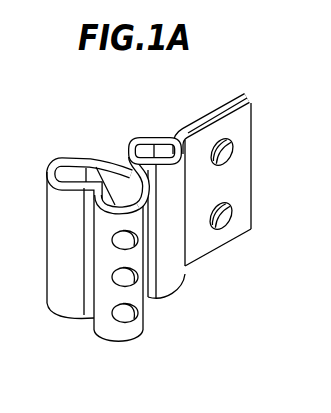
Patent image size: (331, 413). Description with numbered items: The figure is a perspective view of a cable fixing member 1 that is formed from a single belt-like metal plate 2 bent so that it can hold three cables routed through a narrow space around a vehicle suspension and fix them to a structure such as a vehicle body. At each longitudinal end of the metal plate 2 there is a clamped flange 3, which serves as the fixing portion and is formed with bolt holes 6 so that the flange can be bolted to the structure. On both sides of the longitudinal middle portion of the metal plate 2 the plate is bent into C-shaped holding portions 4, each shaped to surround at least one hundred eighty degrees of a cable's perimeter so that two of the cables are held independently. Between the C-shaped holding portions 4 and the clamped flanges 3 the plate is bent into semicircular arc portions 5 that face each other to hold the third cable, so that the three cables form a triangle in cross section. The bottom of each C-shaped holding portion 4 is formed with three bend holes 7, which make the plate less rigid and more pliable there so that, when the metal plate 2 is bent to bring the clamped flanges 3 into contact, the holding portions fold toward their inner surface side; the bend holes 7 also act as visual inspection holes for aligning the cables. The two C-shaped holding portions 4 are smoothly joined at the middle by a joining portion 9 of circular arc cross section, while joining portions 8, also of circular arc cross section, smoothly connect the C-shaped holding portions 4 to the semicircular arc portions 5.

The cable fixing member 1 is at (118, 112).
The metal plate 2 is at (221, 106).
The clamped flanges 3 is at (247, 142).
The C-shaped holding portions 4 is at (54, 161).
The semicircular arc portions 5 is at (135, 166).
The bolt holes 6 is at (241, 196).
The bend holes 7 is at (137, 318).
The joining portions 8 is at (121, 157).
The joining portion 9 is at (93, 189).